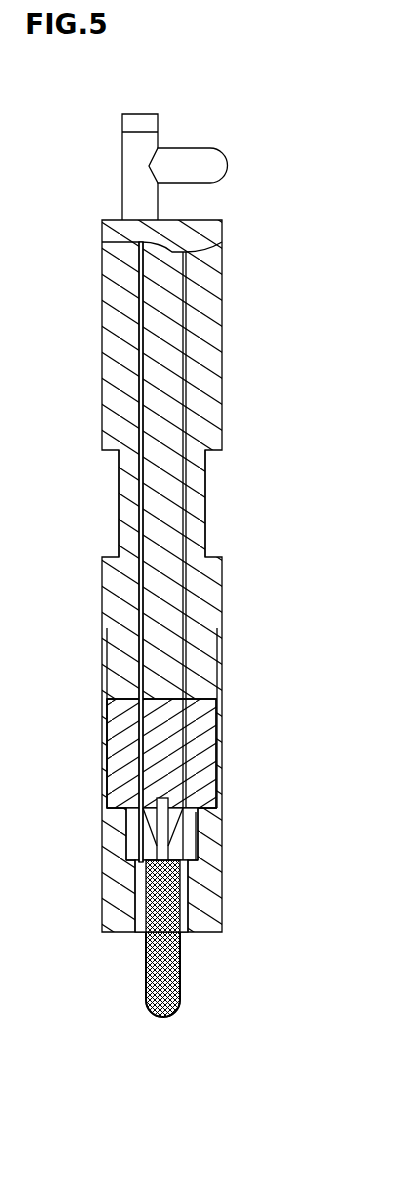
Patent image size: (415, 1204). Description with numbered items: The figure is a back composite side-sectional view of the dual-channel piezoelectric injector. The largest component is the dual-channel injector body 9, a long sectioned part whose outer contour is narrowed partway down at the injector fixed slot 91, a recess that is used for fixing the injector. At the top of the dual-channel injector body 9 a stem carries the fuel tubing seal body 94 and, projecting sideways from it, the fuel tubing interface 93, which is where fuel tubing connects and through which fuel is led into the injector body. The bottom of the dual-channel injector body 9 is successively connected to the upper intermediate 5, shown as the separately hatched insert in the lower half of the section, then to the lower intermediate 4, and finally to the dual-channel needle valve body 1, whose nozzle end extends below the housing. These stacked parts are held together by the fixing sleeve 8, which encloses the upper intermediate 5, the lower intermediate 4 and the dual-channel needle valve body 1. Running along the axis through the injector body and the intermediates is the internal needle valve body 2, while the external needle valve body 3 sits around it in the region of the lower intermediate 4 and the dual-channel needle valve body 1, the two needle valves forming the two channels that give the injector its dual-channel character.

The dual-channel needle valve body 1 is at (186, 893).
The internal needle valve body 2 is at (162, 830).
The external needle valve body 3 is at (186, 867).
The lower intermediate 4 is at (190, 835).
The upper intermediate 5 is at (136, 757).
The fixing sleeve 8 is at (105, 857).
The dual-channel injector body 9 is at (170, 366).
The injector fixed slot 91 is at (205, 528).
The fuel tubing interface 93 is at (207, 172).
The fuel tubing seal body 94 is at (138, 126).